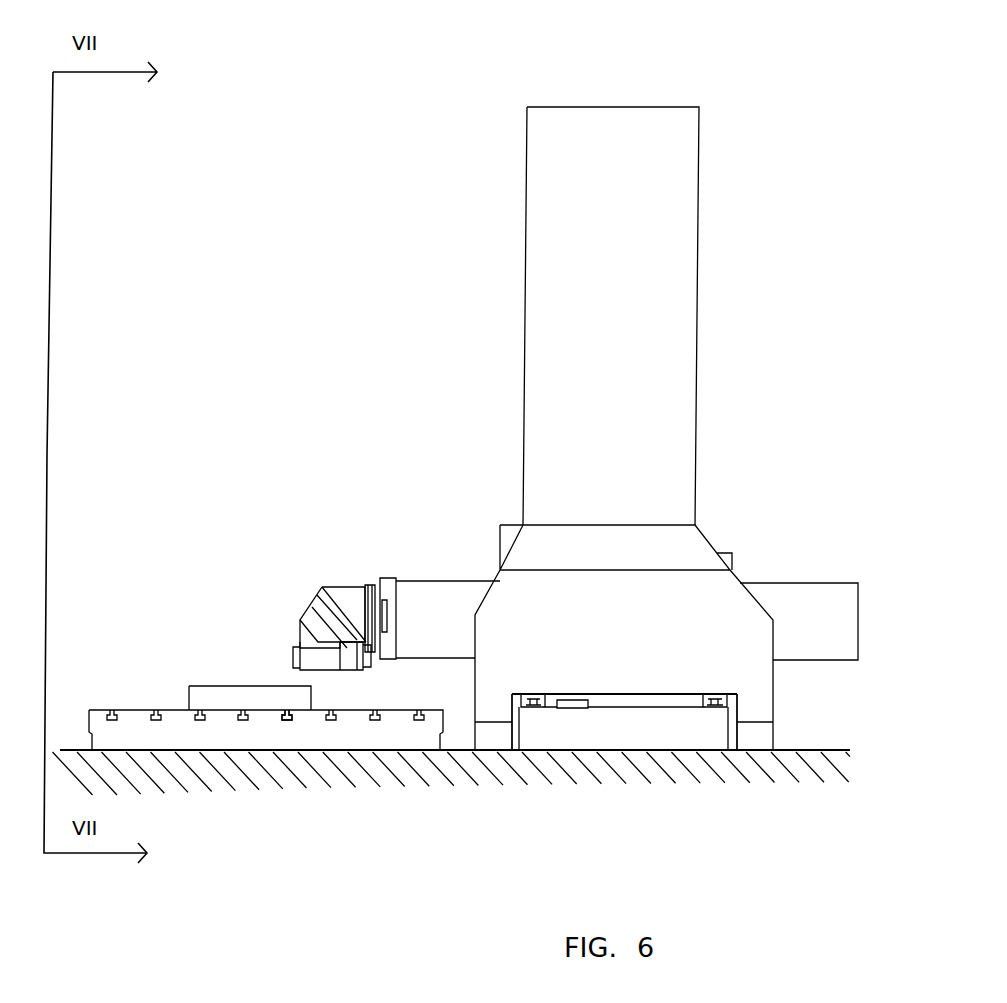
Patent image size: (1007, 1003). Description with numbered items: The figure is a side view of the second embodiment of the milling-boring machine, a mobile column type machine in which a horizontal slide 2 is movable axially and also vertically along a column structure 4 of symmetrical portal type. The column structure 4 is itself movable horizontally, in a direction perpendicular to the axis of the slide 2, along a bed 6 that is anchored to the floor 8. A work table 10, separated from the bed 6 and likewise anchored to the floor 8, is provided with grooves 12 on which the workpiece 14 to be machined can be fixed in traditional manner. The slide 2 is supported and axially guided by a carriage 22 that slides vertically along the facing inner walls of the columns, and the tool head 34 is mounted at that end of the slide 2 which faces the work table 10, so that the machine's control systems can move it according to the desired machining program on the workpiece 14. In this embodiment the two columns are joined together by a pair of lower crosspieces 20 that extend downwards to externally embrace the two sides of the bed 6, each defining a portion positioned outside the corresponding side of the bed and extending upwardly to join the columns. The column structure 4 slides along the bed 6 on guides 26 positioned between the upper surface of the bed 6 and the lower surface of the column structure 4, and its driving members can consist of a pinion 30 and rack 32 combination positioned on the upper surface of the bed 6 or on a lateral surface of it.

The horizontal slide 2 is at (414, 587).
The column structure 4 is at (709, 328).
The bed 6 is at (538, 737).
The floor 8 is at (747, 772).
The work table 10 is at (379, 737).
The grooves 12 is at (288, 720).
The workpiece 14 is at (212, 700).
The lower crosspieces 20 is at (763, 692).
The carriage 22 is at (512, 537).
The guides 26 is at (722, 706).
The pinion 30 is at (577, 704).
The rack 32 is at (559, 705).
The tool head 34 is at (343, 597).